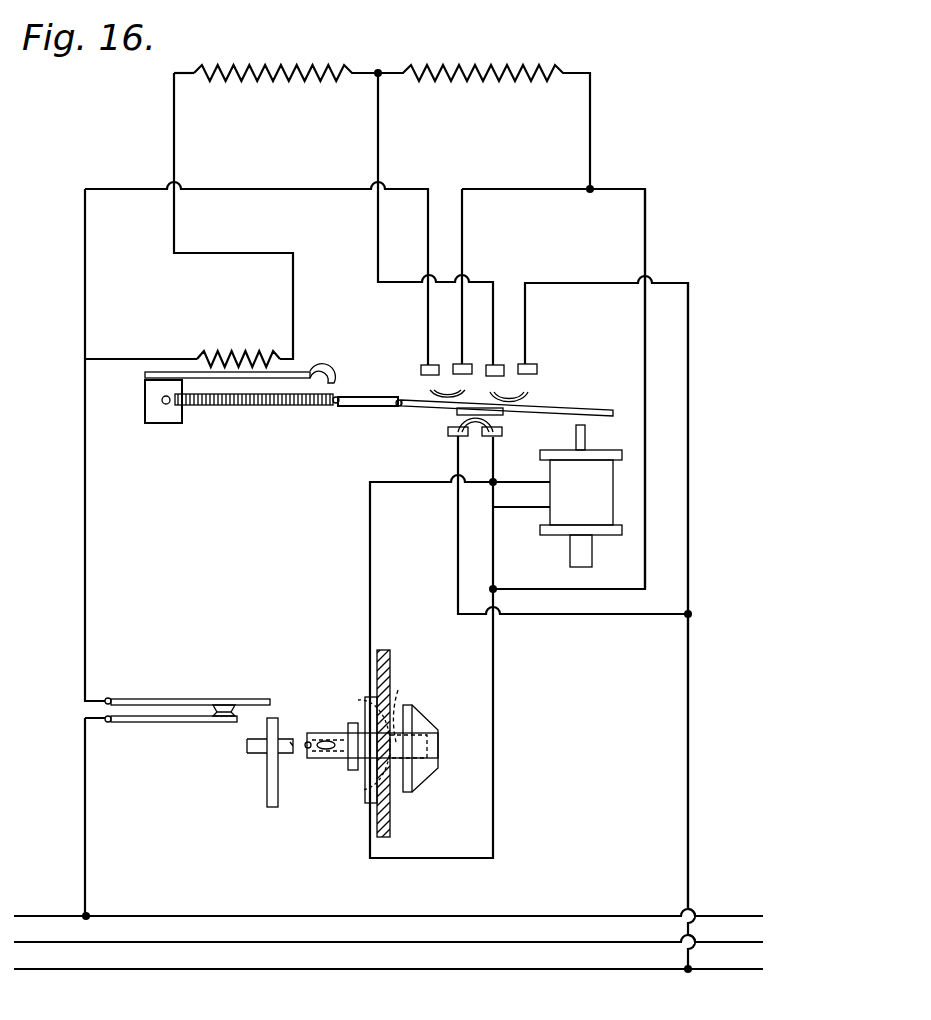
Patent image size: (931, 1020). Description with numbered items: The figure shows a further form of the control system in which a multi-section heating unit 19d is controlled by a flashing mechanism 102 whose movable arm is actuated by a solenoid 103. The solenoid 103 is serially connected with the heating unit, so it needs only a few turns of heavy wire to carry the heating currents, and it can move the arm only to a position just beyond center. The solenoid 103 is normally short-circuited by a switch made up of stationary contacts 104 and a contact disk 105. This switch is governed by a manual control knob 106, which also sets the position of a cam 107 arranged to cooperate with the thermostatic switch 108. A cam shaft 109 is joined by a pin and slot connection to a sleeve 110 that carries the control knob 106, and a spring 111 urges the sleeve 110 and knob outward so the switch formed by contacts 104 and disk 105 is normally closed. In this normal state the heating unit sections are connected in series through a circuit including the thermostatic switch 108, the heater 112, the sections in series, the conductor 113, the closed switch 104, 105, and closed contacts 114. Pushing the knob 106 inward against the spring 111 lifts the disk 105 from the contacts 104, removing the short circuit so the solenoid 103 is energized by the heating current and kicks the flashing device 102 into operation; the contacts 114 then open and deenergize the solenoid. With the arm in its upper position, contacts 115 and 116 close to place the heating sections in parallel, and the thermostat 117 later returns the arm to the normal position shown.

The multi-section heating unit 19d is at (396, 47).
The flashing mechanism 102 is at (603, 407).
The solenoid 103 is at (567, 515).
The stationary contacts 104 is at (377, 690).
The contact disk 105 is at (352, 722).
The manual control knob 106 is at (438, 736).
The cam 107 is at (268, 800).
The thermostatic switch 108 is at (187, 711).
The cam shaft 109 is at (283, 741).
The sleeve 110 is at (318, 760).
The spring 111 is at (400, 720).
The heater 112 is at (238, 356).
The conductor 113 is at (645, 316).
The contacts 114 is at (482, 435).
The contacts 115 is at (460, 369).
The contacts 116 is at (537, 369).
The thermostat 117 is at (320, 371).